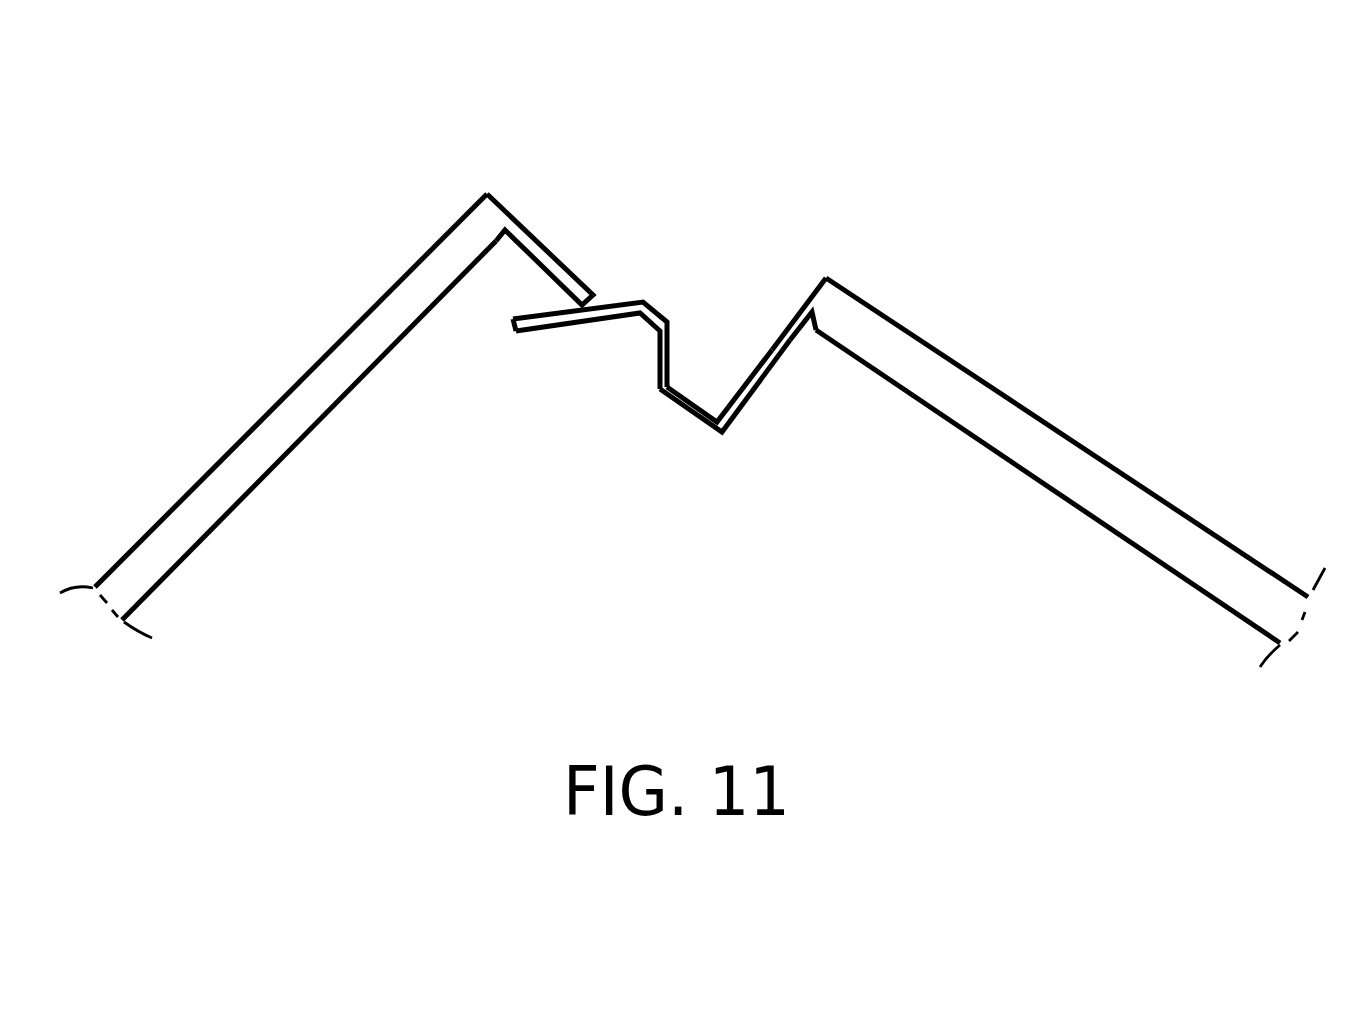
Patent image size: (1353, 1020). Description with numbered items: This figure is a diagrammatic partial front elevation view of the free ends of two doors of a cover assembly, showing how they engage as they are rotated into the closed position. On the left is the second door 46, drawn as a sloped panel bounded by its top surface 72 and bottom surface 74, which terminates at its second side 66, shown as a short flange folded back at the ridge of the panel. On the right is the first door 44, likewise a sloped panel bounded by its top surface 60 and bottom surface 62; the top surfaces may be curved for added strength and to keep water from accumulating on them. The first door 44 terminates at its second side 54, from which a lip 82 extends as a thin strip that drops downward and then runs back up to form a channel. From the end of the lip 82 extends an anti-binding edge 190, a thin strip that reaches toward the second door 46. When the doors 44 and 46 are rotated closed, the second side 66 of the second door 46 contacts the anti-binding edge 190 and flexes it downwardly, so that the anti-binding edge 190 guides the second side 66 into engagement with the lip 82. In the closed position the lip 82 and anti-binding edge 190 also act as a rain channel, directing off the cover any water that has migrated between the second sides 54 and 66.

The first door 44 is at (920, 429).
The second door 46 is at (323, 360).
The second side 54 is at (770, 350).
The top surface 60 is at (1050, 425).
The bottom surface 62 is at (1070, 500).
The second side 66 is at (540, 247).
The top surface 72 is at (337, 343).
The bottom surface 74 is at (205, 538).
The lip 82 is at (695, 413).
The anti-binding edge 190 is at (593, 323).